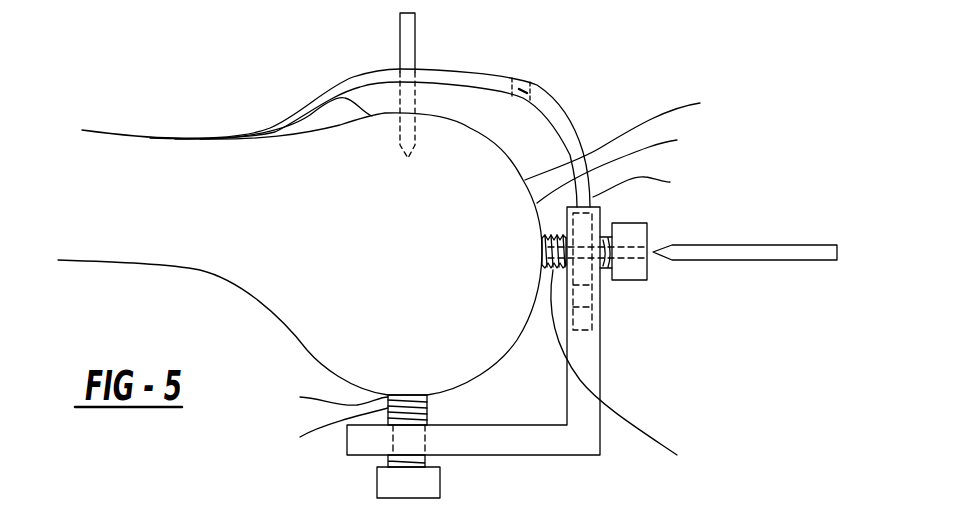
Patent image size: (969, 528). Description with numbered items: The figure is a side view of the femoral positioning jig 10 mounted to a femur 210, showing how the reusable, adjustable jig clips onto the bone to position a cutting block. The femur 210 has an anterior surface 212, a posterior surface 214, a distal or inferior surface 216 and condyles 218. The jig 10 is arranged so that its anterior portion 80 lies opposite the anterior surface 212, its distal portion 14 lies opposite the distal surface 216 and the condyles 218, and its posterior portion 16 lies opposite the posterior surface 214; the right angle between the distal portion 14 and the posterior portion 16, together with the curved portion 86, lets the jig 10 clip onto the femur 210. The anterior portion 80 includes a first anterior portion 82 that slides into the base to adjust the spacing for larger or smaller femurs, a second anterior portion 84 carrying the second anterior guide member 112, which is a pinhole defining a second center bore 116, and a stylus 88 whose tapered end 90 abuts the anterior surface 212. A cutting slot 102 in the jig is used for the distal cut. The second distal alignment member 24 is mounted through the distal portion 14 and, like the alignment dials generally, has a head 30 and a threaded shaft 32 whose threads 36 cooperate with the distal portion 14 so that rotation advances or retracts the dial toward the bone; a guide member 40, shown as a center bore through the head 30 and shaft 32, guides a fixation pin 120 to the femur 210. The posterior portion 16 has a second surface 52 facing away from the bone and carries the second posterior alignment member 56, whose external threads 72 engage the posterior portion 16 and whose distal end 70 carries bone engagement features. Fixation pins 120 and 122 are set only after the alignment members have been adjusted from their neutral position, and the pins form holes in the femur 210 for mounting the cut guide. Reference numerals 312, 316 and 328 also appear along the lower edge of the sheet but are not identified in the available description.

The femoral positioning jig 10 is at (703, 373).
The distal portion 14 is at (590, 343).
The posterior portion 16 is at (507, 438).
The second distal alignment member 24 is at (630, 282).
The head 30 is at (637, 232).
The shaft 32 is at (542, 270).
The threads 36 is at (626, 372).
The guide member 40 is at (630, 263).
The second surface 52 is at (552, 457).
The second posterior alignment member 56 is at (387, 477).
The distal end 70 is at (427, 402).
The external threads 72 is at (321, 432).
The anterior portion 80 is at (385, 70).
The first anterior portion 82 is at (644, 184).
The second anterior portion 84 is at (487, 70).
The curved portion 86 is at (556, 112).
The stylus 88 is at (203, 133).
The tapered end 90 is at (148, 137).
The cutting slot 102 is at (520, 80).
The second anterior guide member 112 is at (417, 62).
The second center bore 116 is at (443, 65).
The fixation pin 120 is at (713, 258).
The fixation pin 122 is at (400, 13).
The femur 210 is at (160, 202).
The anterior surface 212 is at (343, 97).
The posterior surface 214 is at (318, 402).
The distal surface 216 is at (631, 136).
The condyles 218 is at (626, 166).
The lower member 312 is at (287, 527).
The lower member 316 is at (193, 527).
The lower member edge 328 is at (74, 517).